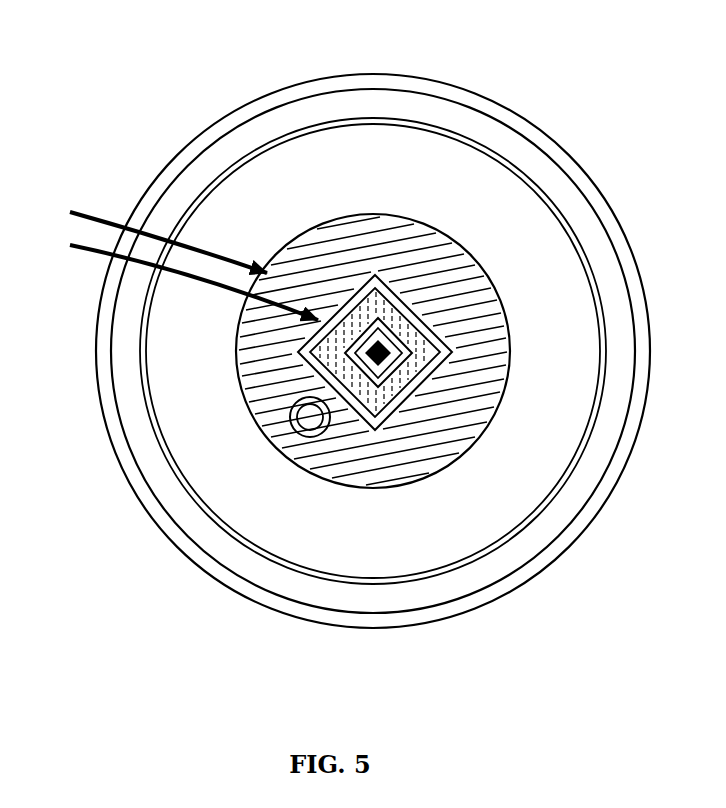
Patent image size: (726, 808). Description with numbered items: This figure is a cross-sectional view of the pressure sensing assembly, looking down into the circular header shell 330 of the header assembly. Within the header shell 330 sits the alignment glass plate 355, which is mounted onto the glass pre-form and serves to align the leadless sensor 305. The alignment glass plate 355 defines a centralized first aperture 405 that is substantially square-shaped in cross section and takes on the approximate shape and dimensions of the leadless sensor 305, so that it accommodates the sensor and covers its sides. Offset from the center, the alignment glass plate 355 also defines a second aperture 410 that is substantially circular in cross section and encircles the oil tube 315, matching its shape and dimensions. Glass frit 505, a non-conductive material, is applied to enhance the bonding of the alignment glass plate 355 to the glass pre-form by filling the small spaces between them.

The header shell 330 is at (218, 112).
The alignment glass plate 355 is at (403, 238).
The first aperture 405 is at (427, 297).
The leadless sensor 305 is at (392, 376).
The oil tube 315 is at (292, 414).
The second aperture 410 is at (313, 440).
The glass frit 505 is at (164, 266).